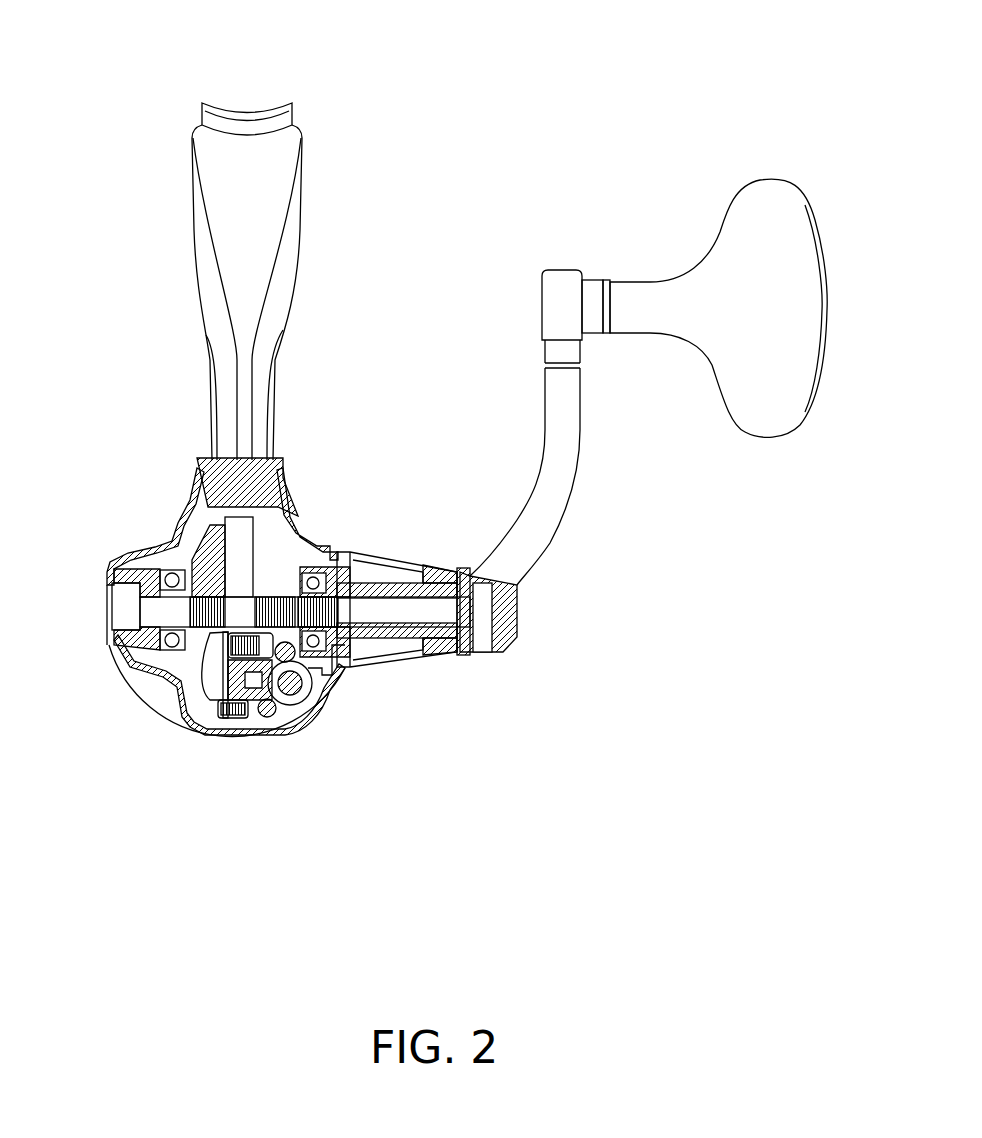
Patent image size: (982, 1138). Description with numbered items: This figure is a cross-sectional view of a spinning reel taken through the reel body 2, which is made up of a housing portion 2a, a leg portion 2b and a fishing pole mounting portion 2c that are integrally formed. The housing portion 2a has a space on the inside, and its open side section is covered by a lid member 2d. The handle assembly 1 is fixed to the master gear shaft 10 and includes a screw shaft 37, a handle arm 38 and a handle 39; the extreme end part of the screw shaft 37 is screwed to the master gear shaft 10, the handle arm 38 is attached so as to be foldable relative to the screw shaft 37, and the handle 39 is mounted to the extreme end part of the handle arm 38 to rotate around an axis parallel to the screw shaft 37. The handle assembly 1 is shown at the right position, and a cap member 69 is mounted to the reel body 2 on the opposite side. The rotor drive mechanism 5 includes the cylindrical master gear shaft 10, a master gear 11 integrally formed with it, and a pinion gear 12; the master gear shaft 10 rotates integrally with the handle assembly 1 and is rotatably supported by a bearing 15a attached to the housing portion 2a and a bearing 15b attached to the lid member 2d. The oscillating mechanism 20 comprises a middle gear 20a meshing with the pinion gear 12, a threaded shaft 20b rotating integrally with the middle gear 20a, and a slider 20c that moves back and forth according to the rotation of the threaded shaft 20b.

The handle assembly 1 is at (567, 252).
The reel body 2 is at (296, 358).
The housing portion 2a is at (320, 548).
The leg portion 2b is at (262, 393).
The fishing pole mounting portion 2c is at (257, 117).
The lid member 2d is at (183, 545).
The rotor drive mechanism 5 is at (170, 548).
The master gear shaft 10 is at (255, 597).
The master gear 11 is at (222, 652).
The pinion gear 12 is at (177, 720).
The bearing 15a is at (313, 577).
The bearing 15b is at (168, 573).
The oscillating mechanism 20 is at (220, 733).
The middle gear 20a is at (325, 695).
The threaded shaft 20b is at (297, 733).
The slider 20c is at (250, 733).
The screw shaft 37 is at (403, 590).
The handle arm 38 is at (583, 467).
The handle 39 is at (655, 290).
The cap member 69 is at (128, 555).